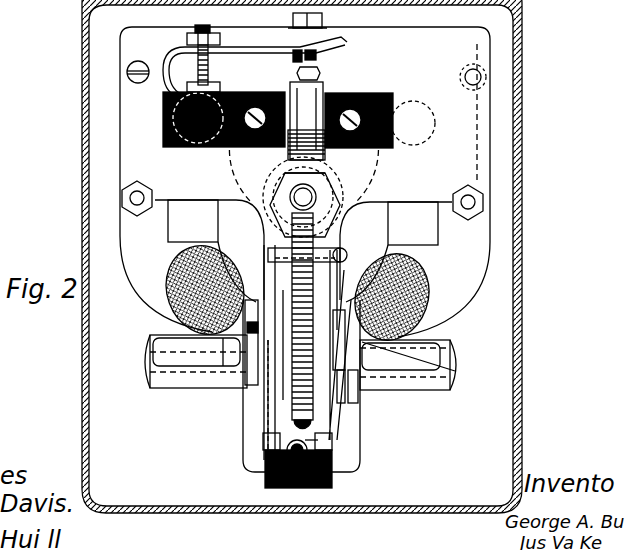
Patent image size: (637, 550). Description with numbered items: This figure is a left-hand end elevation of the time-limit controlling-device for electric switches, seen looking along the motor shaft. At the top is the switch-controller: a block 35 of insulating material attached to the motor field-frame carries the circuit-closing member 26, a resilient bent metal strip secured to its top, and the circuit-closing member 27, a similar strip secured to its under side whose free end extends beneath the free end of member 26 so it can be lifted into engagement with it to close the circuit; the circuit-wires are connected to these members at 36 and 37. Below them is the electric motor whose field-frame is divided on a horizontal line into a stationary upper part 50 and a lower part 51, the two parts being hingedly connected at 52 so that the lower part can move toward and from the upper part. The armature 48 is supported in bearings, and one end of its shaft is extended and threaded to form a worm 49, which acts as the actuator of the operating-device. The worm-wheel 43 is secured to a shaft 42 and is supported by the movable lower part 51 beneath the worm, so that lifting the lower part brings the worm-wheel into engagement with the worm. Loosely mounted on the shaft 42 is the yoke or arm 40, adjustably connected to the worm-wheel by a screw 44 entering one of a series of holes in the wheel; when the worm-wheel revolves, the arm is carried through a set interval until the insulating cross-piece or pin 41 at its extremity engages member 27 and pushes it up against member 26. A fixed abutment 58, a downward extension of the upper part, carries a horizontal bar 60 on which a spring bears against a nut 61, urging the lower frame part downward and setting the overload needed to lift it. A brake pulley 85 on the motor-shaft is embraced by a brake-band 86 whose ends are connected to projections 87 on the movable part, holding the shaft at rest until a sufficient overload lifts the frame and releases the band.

The circuit-closing member 26 is at (252, 48).
The circuit-closing member 27 is at (348, 93).
The block of insulating material 35 is at (170, 122).
The circuit-wire connection 36 is at (186, 40).
The circuit-wire connection 37 is at (322, 76).
The yoke or arm 40 is at (326, 422).
The cross-piece or pin 41 is at (265, 480).
The shaft 42 is at (368, 349).
The worm-wheel 43 is at (343, 200).
The screw 44 is at (360, 398).
The armature 48 is at (302, 199).
The worm 49 is at (300, 196).
The upper part of field-frame 50 is at (139, 162).
The lower part of field-frame 51 is at (160, 291).
The hinge connection 52 is at (148, 356).
The fixed abutment 58 is at (253, 422).
The bar 60 is at (285, 443).
The nut 61 is at (318, 443).
The pulley 85 is at (335, 175).
The brake-band 86 is at (303, 221).
The projections 87 is at (455, 371).